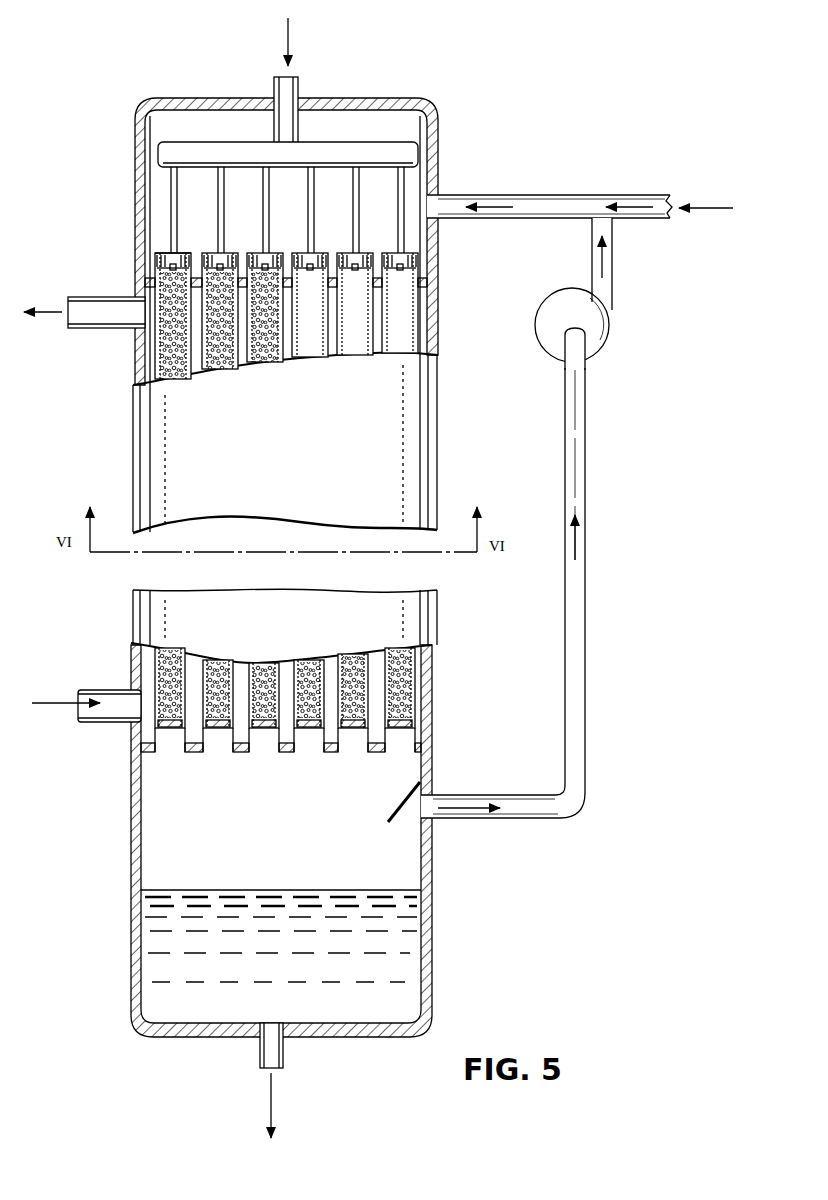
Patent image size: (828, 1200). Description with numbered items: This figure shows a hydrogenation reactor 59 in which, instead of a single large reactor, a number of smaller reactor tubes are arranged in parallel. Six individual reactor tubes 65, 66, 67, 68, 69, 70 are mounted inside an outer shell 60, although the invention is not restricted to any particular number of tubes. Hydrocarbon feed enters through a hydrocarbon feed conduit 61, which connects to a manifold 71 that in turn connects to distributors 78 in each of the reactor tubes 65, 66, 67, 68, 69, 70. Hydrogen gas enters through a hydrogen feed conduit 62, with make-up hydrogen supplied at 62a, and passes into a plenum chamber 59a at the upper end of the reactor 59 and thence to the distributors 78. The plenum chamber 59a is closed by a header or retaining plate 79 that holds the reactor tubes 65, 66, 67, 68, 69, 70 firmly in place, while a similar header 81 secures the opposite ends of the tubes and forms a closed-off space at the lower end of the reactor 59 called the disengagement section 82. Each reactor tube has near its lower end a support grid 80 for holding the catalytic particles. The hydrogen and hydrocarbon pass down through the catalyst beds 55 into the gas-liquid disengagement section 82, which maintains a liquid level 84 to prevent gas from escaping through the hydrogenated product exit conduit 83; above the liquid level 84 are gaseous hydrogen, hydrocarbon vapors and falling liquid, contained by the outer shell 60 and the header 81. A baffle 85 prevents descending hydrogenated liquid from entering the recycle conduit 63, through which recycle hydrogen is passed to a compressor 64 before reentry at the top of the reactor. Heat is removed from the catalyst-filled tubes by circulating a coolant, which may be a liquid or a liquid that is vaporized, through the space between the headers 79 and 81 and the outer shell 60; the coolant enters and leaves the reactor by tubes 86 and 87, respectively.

The catalyst beds 55 is at (170, 327).
The reactor 59 is at (160, 432).
The plenum chamber 59a is at (155, 210).
The outer shell 60 is at (135, 345).
The hydrocarbon feed conduit 61 is at (298, 87).
The hydrogen feed conduit 62 is at (470, 195).
The make-up hydrogen supply 62a is at (665, 207).
The recycle conduit 63 is at (565, 800).
The compressor 64 is at (594, 367).
The reactor tube 65 is at (180, 372).
The reactor tube 66 is at (222, 365).
The reactor tube 67 is at (270, 357).
The reactor tube 68 is at (305, 347).
The reactor tube 69 is at (357, 335).
The reactor tube 70 is at (403, 322).
The manifold 71 is at (288, 154).
The distributors 78 is at (392, 250).
The header or retaining plate 79 is at (162, 247).
The support grid 80 is at (167, 752).
The header 81 is at (153, 752).
The disengagement section 82 is at (170, 862).
The hydrogenated product exit conduit 83 is at (283, 1058).
The liquid level 84 is at (296, 888).
The baffle 85 is at (390, 812).
The coolant inlet tube 86 is at (108, 727).
The coolant outlet tube 87 is at (147, 276).